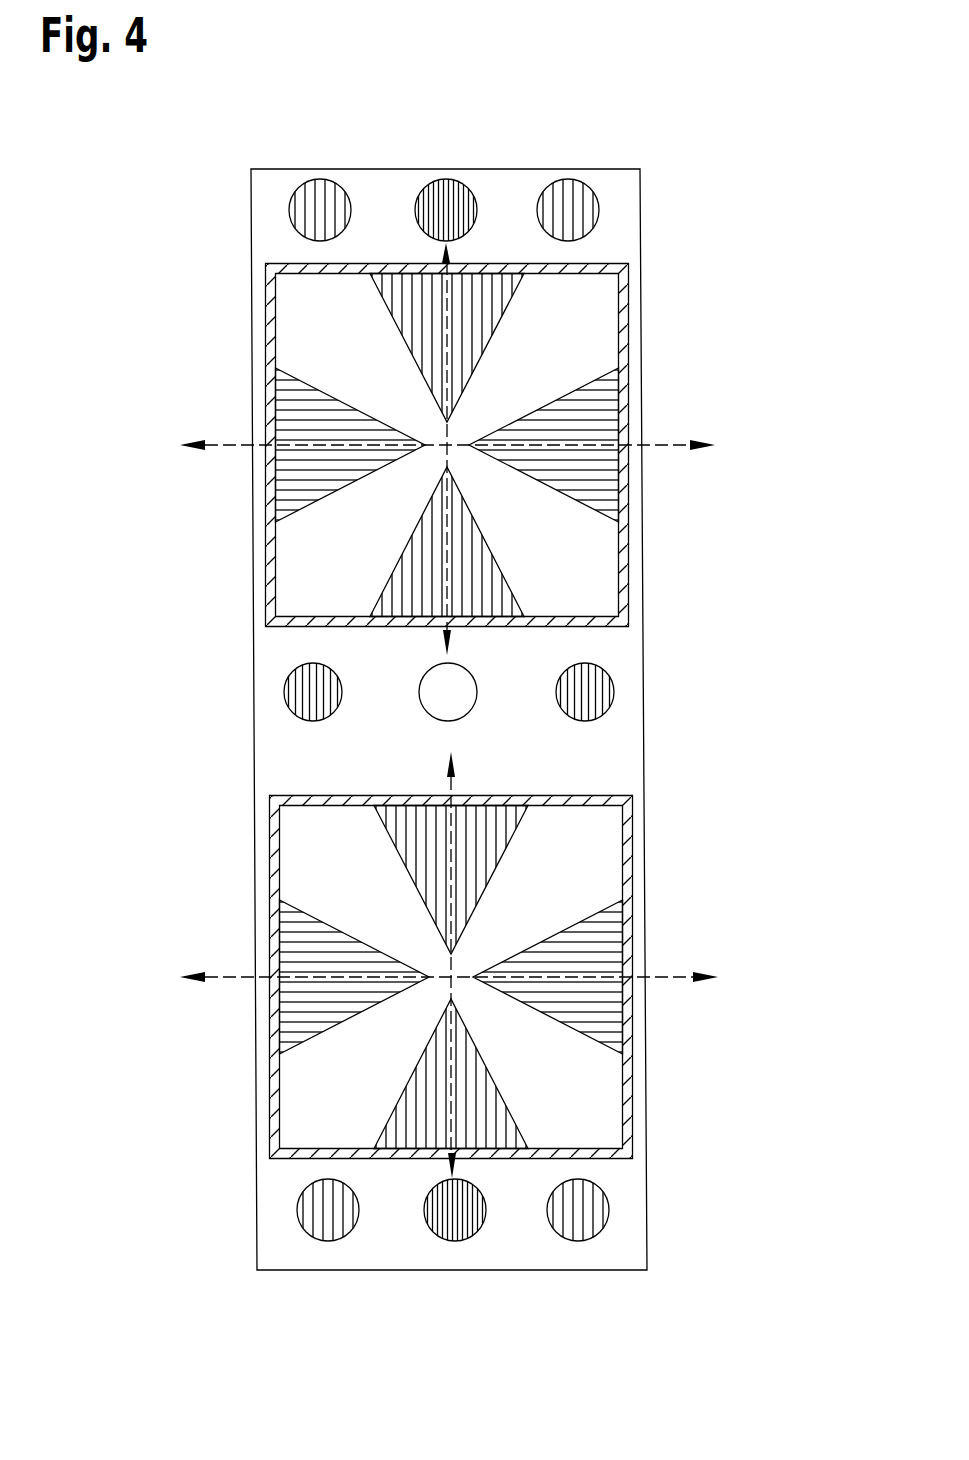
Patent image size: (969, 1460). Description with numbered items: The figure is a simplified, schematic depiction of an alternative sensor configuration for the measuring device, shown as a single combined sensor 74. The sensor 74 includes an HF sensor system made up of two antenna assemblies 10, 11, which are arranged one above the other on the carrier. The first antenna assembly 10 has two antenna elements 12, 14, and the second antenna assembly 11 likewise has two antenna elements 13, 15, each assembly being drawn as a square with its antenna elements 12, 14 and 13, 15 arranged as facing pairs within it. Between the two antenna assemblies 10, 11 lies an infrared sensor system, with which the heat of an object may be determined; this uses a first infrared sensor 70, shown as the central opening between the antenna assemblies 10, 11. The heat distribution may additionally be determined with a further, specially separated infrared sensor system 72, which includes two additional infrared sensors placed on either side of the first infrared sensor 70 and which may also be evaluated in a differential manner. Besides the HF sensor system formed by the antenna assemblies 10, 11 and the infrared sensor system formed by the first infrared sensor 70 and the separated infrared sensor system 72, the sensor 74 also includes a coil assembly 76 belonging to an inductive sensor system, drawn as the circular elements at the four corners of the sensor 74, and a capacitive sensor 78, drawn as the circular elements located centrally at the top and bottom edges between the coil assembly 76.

The antenna assembly 10 is at (515, 445).
The antenna assembly 11 is at (521, 977).
The antenna element 12 is at (613, 473).
The antenna element 13 is at (617, 1002).
The antenna element 14 is at (497, 598).
The antenna element 15 is at (502, 1132).
The first infrared sensor 70 is at (403, 670).
The infrared sensor system 72 is at (535, 721).
The sensor 74 is at (385, 1255).
The coil assembly 76 is at (318, 185).
The capacitive sensor 78 is at (443, 185).